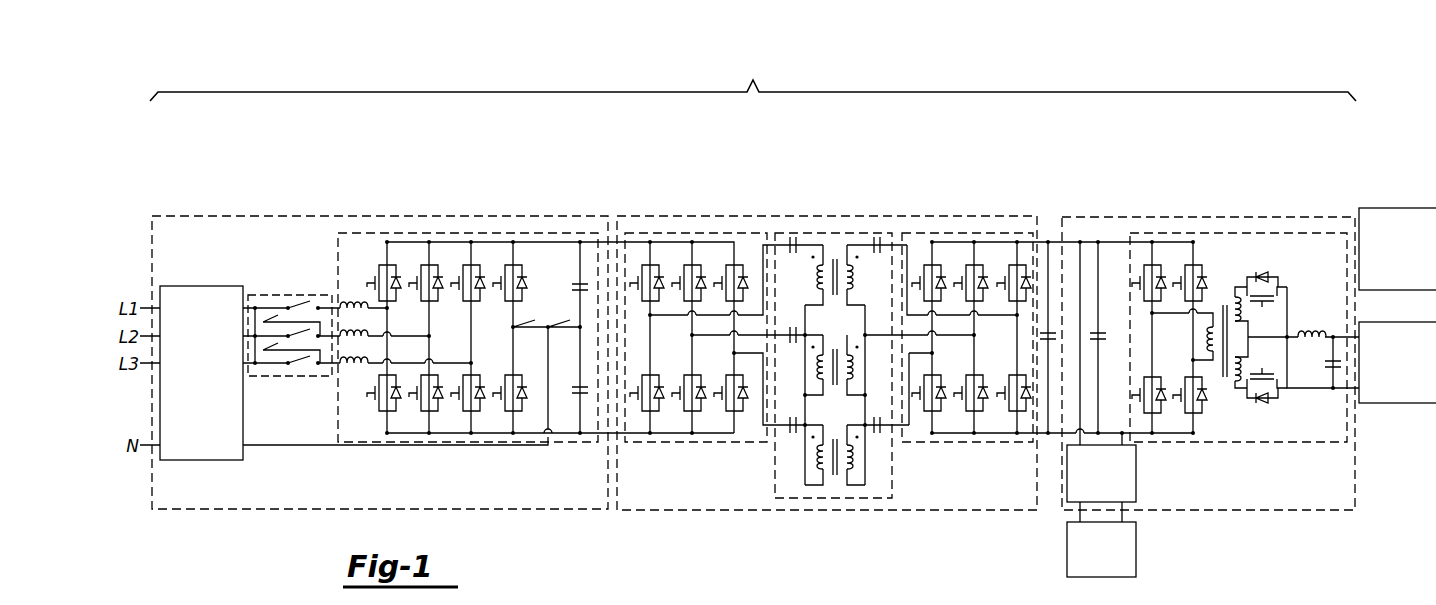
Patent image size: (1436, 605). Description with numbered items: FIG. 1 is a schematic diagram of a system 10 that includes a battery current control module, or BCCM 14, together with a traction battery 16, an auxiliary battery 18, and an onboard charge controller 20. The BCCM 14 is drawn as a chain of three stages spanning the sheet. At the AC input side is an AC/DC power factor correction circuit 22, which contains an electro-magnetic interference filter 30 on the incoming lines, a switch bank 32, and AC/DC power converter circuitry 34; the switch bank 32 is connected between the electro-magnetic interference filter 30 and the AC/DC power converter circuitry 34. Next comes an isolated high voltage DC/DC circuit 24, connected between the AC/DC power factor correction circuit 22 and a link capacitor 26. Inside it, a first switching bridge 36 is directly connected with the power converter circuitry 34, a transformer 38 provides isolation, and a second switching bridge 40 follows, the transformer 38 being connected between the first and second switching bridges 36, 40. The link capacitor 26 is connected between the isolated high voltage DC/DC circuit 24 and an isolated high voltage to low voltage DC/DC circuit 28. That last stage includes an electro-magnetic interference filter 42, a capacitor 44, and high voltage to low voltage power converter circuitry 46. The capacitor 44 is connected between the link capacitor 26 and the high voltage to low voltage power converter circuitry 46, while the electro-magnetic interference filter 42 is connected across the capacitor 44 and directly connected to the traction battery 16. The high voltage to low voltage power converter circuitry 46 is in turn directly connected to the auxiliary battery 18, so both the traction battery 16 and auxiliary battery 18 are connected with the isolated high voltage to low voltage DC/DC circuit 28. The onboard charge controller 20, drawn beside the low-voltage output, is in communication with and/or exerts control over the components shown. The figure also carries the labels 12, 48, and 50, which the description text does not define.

The system 10 is at (203, 74).
The vehicle 12 is at (1273, 604).
The BCCM 14 is at (753, 77).
The traction battery 16 is at (1136, 550).
The auxiliary battery 18 is at (1400, 403).
The onboard charge controller 20 is at (1403, 208).
The AC/DC power factor correction circuit 22 is at (380, 216).
The isolated high voltage DC/DC circuit 24 is at (826, 216).
The link capacitor 26 is at (1043, 338).
The isolated high voltage to low voltage DC/DC circuit 28 is at (1207, 217).
The electro-magnetic interference filter 30 is at (201, 286).
The switch bank 32 is at (291, 295).
The AC/DC power converter circuitry 34 is at (470, 242).
The first switching bridge 36 is at (697, 443).
The transformer 38 is at (833, 498).
The second switching bridge 40 is at (967, 443).
The electro-magnetic interference filter 42 is at (1136, 472).
The capacitor 44 is at (1104, 342).
The high voltage to low voltage power converter circuitry 46 is at (1240, 233).
The charging port 48 is at (508, 598).
The controller 50 is at (790, 604).